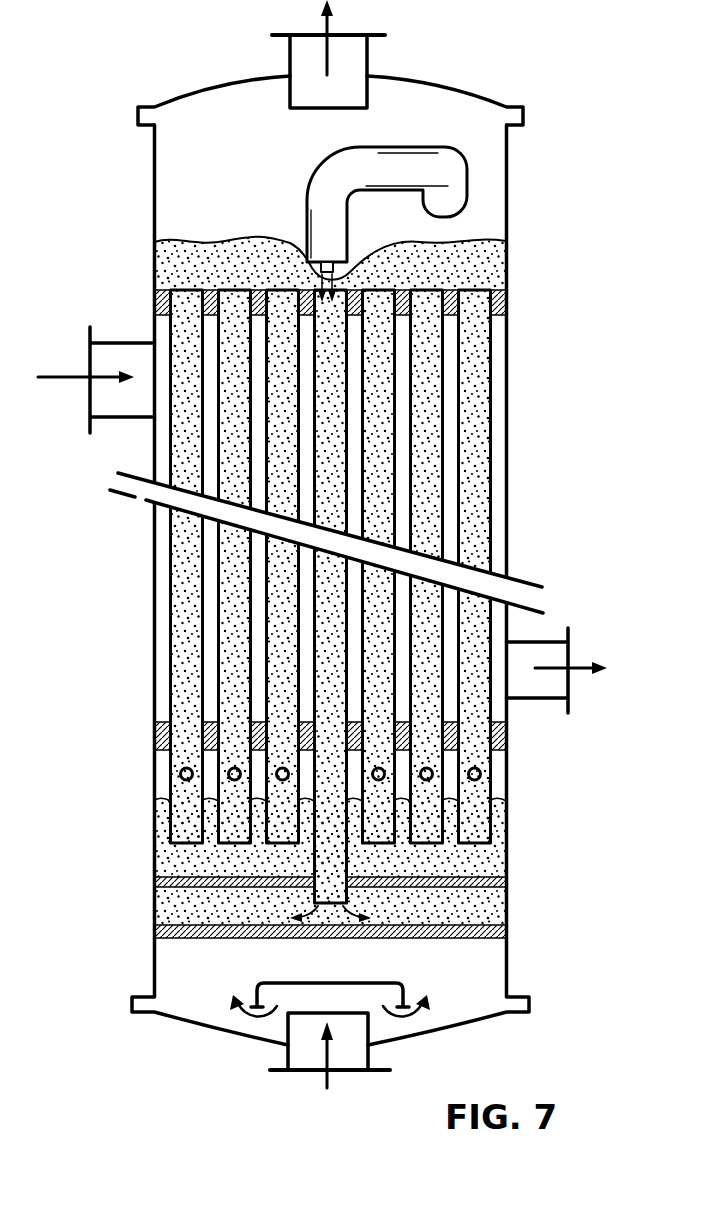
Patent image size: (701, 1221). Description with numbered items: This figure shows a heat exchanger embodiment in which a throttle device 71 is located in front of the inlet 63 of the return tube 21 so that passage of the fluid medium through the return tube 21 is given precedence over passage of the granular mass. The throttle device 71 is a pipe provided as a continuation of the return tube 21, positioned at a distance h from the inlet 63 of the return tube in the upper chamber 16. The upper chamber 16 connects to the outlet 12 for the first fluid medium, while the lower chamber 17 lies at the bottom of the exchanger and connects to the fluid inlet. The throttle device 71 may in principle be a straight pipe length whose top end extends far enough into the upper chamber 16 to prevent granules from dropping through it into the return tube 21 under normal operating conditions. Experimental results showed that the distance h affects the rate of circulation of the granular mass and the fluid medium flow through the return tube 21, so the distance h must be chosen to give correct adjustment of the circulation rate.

The outlet 12 is at (355, 50).
The upper chamber 16 is at (480, 155).
The throttle device 71 is at (394, 176).
The distance h is at (322, 266).
The inlet of the return tube 63 is at (329, 320).
The return tube 21 is at (331, 409).
The lower chamber 17 is at (487, 958).